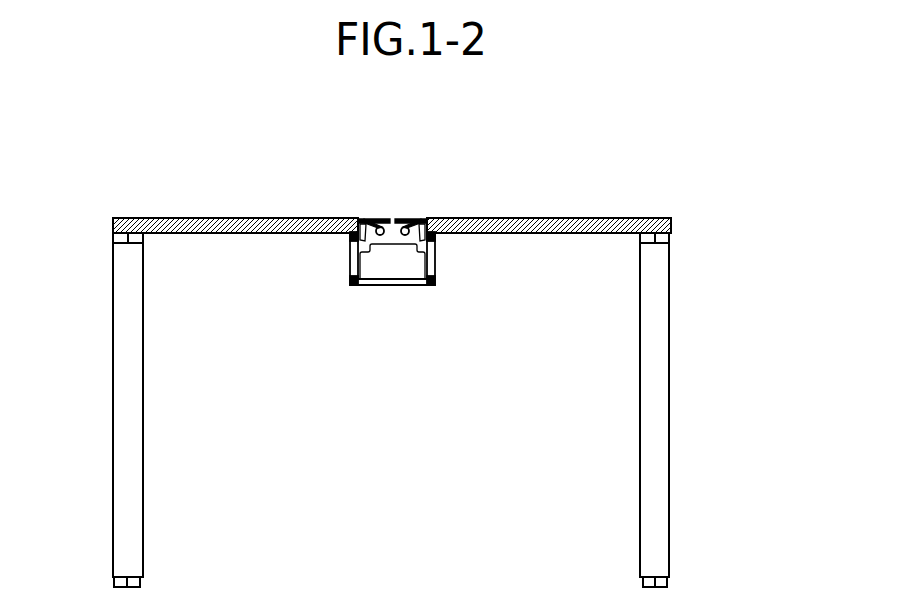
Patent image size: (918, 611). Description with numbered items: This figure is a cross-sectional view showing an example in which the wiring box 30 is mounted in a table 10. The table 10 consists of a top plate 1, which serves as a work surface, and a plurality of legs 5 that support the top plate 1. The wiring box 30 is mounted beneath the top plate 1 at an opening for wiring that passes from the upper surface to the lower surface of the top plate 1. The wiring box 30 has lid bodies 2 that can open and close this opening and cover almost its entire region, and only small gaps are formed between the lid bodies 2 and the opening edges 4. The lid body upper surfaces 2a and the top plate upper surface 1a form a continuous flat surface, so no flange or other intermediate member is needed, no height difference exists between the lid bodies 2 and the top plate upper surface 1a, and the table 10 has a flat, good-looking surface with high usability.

The table 10 is at (390, 346).
The top plate 1 is at (528, 218).
The top plate upper surface 1a is at (622, 218).
The lid body 2 is at (375, 218).
The lid body upper surface 2a is at (380, 218).
The opening edge 4 is at (358, 218).
The wiring box 30 is at (426, 221).
The leg 5 is at (138, 457).